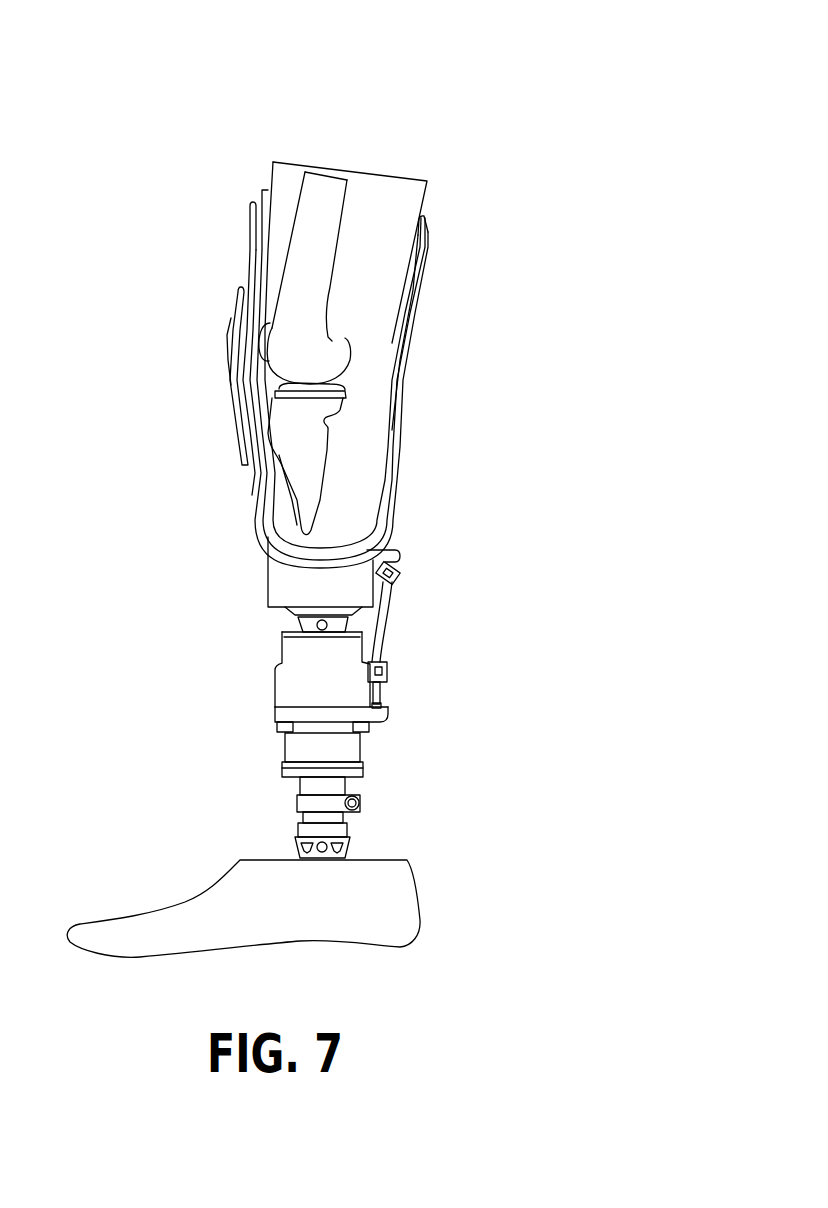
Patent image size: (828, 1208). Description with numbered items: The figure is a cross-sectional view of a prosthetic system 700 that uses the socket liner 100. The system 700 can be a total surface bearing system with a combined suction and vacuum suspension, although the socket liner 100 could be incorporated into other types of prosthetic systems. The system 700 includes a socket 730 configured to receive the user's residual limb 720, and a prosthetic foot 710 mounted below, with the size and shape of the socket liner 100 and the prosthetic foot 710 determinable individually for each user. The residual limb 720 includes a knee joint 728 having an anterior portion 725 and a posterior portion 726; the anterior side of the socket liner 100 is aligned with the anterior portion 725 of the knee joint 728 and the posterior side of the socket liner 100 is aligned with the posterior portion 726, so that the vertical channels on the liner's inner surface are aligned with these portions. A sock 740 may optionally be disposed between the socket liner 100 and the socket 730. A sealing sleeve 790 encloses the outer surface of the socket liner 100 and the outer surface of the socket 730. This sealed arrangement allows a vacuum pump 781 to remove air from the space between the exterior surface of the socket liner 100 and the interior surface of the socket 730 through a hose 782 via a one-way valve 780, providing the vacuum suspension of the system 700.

The prosthetic system 700 is at (328, 62).
The prosthetic foot 710 is at (126, 882).
The residual limb 720 is at (393, 204).
The anterior portion 725 is at (277, 343).
The posterior portion 726 is at (378, 360).
The knee joint 728 is at (313, 353).
The socket 730 is at (288, 588).
The sock 740 is at (248, 302).
The one-way valve 780 is at (388, 690).
The vacuum pump 781 is at (300, 672).
The hose 782 is at (388, 610).
The sealing sleeve 790 is at (248, 218).
The socket liner 100 is at (423, 222).